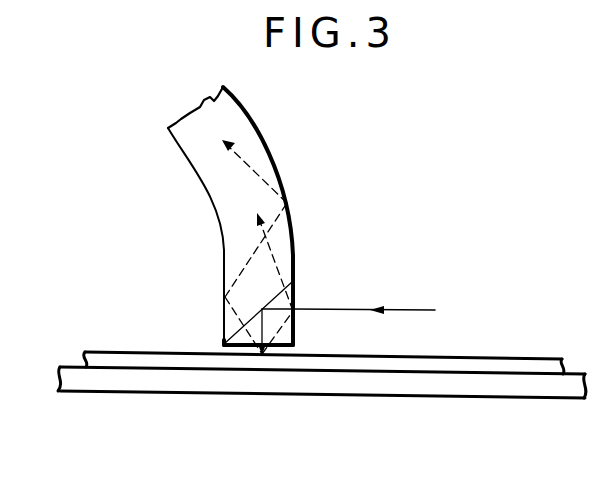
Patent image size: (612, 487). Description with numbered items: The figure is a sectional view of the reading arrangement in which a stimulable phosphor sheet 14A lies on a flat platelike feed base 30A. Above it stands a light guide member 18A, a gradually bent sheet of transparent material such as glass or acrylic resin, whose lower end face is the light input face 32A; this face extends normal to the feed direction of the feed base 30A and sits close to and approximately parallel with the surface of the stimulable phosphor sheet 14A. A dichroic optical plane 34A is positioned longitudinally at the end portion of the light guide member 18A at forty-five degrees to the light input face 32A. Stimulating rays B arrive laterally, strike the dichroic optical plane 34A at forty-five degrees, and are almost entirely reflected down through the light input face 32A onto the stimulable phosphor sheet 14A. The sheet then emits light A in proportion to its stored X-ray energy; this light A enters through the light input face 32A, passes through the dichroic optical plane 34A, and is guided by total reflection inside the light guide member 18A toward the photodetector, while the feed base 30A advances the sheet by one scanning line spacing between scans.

The stimulable phosphor sheet 14A is at (517, 357).
The light guide member 18A is at (261, 133).
The feed base 30A is at (532, 398).
The light input face 32A is at (223, 349).
The dichroic optical plane 34A is at (292, 294).
The light A is at (273, 153).
The stimulating rays B is at (407, 309).